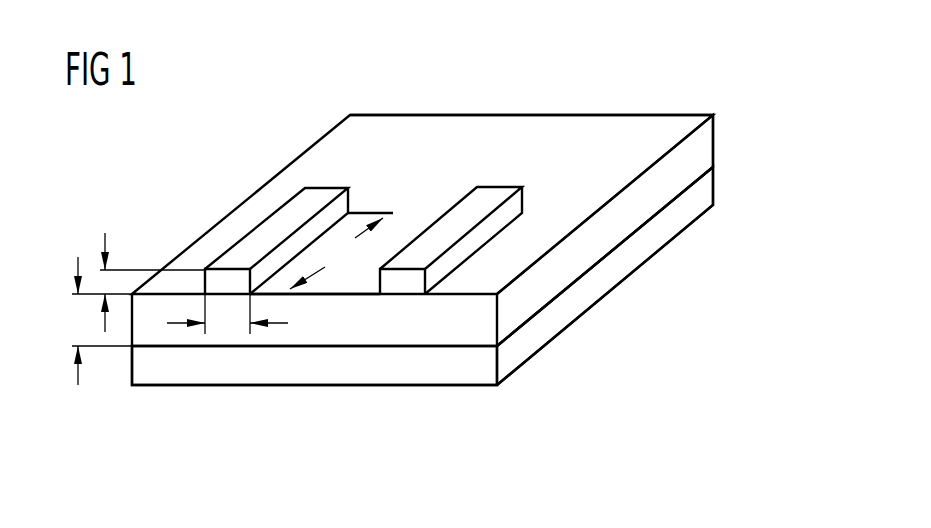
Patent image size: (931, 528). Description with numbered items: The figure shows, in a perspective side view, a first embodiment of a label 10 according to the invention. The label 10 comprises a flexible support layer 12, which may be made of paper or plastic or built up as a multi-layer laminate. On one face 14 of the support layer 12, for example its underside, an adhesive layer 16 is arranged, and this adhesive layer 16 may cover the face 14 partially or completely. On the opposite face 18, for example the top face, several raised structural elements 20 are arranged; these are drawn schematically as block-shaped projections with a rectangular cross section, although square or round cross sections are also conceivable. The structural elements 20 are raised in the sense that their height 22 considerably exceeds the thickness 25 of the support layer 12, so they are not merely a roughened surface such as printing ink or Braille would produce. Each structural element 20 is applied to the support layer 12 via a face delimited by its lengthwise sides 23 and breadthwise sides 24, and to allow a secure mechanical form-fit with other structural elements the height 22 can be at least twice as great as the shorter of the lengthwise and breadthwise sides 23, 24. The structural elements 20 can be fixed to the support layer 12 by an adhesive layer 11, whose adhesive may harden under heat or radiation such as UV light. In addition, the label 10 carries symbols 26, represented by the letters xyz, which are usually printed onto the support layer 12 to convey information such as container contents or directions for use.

The label 10 is at (748, 196).
The adhesive layer 11 is at (400, 296).
The flexible support layer 12 is at (705, 148).
The face 14 is at (602, 262).
The adhesive layer 16 is at (427, 372).
The face 18 is at (633, 126).
The raised structural elements 20 is at (498, 196).
The height 22 is at (105, 283).
The lengthwise sides 23 is at (341, 251).
The breadthwise sides 24 is at (227, 317).
The thickness 25 is at (98, 321).
The symbols 26 is at (527, 140).